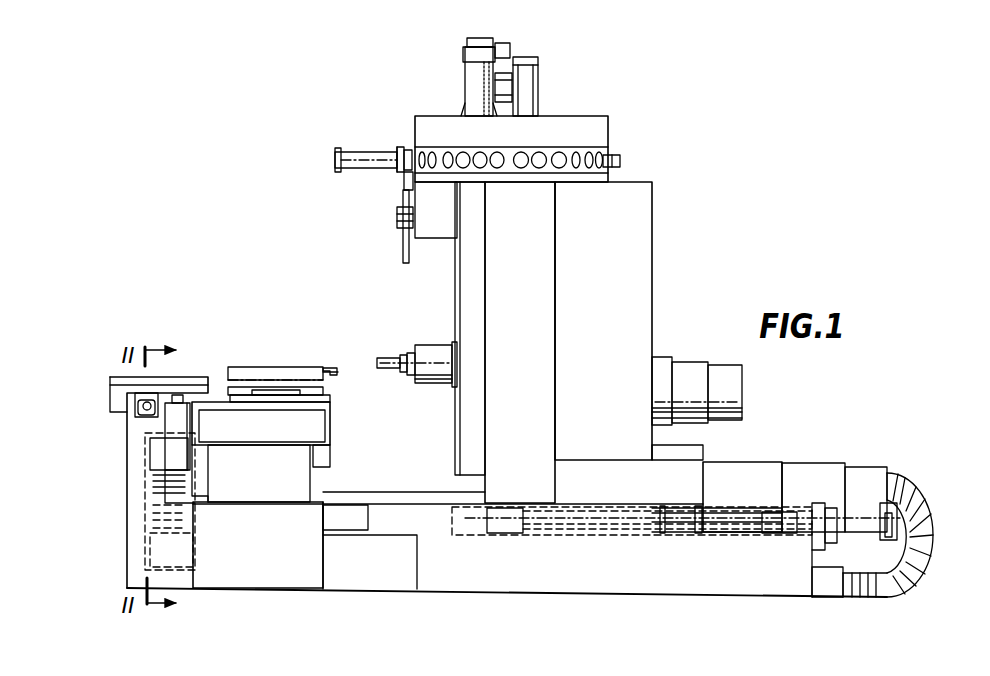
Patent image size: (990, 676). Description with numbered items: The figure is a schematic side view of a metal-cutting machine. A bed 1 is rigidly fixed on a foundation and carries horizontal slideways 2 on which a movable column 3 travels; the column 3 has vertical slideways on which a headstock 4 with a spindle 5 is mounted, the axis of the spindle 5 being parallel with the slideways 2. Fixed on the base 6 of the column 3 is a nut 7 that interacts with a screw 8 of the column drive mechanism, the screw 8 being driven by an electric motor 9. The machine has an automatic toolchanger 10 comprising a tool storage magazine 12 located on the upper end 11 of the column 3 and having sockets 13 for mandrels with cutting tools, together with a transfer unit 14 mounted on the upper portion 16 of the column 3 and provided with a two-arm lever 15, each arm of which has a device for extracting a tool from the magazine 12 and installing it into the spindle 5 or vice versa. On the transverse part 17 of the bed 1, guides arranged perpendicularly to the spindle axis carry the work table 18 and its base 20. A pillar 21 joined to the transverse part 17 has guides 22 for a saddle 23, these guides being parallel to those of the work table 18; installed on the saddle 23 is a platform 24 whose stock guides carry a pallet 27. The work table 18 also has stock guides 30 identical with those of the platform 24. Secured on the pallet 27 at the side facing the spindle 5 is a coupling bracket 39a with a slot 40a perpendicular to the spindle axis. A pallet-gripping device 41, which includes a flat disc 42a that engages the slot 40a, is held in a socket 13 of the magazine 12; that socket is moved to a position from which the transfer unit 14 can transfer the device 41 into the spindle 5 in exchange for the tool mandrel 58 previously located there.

The bed 1 is at (560, 547).
The horizontal slideways 2 is at (398, 500).
The movable column 3 is at (540, 357).
The headstock 4 is at (445, 367).
The spindle 5 is at (413, 343).
The base of the column 6 is at (622, 473).
The nut 7 is at (683, 517).
The screw 8 is at (718, 520).
The electric motor 9 is at (900, 513).
The automatic toolchanger 10 is at (388, 187).
The upper end of the column 11 is at (633, 177).
The tool storage magazine 12 is at (422, 132).
The sockets 13 is at (612, 156).
The transfer unit 14 is at (425, 210).
The two-arm lever 15 is at (405, 235).
The upper portion of the column 16 is at (497, 252).
The transverse part of the bed 17 is at (227, 488).
The work table 18 is at (270, 397).
The base 20 is at (297, 430).
The pillar 21 is at (137, 463).
The guides 22 is at (125, 398).
The saddle 23 is at (198, 413).
The platform 24 is at (200, 383).
The pallet 27 is at (253, 373).
The stock guides 30 is at (323, 383).
The bracket 39a is at (338, 372).
The slot 40a is at (332, 363).
The pallet-gripping device 41 is at (362, 157).
The flat disc 42a is at (335, 160).
The tool mandrel 58 is at (390, 368).